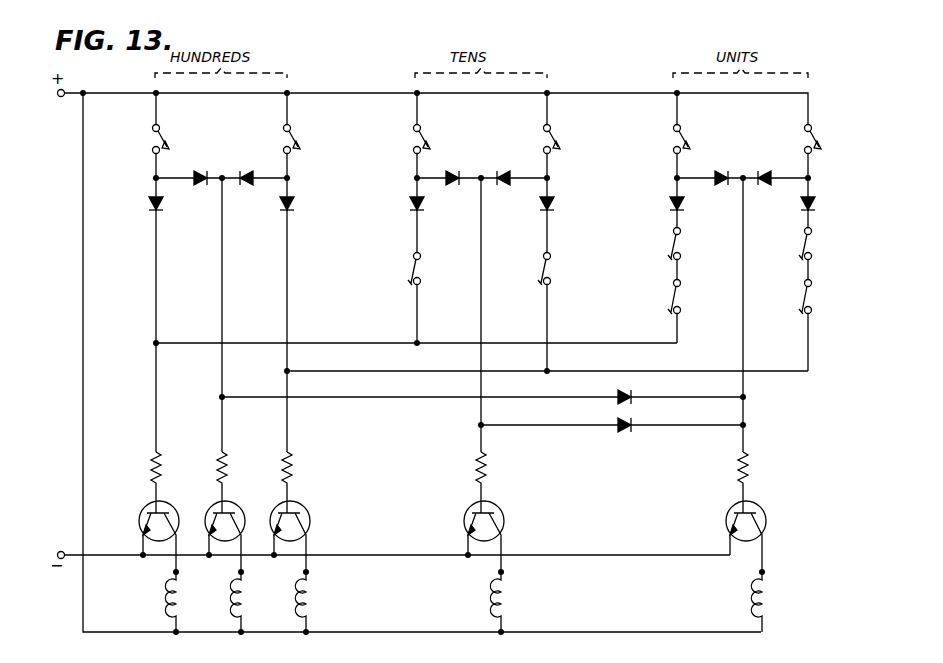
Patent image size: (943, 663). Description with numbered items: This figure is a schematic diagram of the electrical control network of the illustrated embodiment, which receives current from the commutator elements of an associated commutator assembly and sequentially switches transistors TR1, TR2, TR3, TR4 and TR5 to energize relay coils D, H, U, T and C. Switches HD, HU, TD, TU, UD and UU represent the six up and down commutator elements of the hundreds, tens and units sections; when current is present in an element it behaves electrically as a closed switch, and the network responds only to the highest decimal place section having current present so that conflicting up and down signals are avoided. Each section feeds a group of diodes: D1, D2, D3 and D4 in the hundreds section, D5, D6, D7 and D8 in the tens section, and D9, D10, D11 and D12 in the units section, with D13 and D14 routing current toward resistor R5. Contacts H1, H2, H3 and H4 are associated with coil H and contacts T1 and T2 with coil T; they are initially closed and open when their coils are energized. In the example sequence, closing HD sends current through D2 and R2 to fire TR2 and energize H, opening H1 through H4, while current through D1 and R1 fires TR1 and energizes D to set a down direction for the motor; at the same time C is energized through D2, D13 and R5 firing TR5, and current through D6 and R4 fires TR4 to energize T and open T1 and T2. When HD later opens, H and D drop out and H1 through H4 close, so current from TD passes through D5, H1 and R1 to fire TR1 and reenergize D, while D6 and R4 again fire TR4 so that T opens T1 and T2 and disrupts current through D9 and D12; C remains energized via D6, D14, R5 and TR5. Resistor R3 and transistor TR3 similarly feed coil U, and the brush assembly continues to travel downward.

The hundreds down switch HD is at (148, 135).
The hundreds up switch HU is at (276, 135).
The tens down switch TD is at (408, 135).
The tens up switch TU is at (538, 135).
The units down switch UD is at (670, 135).
The units up switch UU is at (801, 152).
The diode D1 is at (145, 212).
The diode D2 is at (200, 189).
The diode D3 is at (246, 189).
The diode D4 is at (298, 202).
The diode D5 is at (404, 210).
The diode D6 is at (450, 189).
The diode D7 is at (504, 189).
The diode D8 is at (561, 207).
The diode D9 is at (665, 207).
The diode D10 is at (712, 190).
The diode D11 is at (768, 190).
The diode D12 is at (824, 208).
The diode D13 is at (641, 392).
The diode D14 is at (644, 421).
The contact H1 is at (428, 269).
The contact H2 is at (559, 269).
The contact H3 is at (686, 244).
The contact H4 is at (818, 244).
The contact T1 is at (687, 297).
The contact T2 is at (817, 297).
The resistor R1 is at (171, 468).
The resistor R2 is at (236, 468).
The resistor R3 is at (301, 468).
The resistor R4 is at (497, 468).
The resistor R5 is at (758, 468).
The transistor TR1 is at (169, 528).
The transistor TR2 is at (234, 528).
The transistor TR3 is at (305, 528).
The transistor TR4 is at (501, 528).
The transistor TR5 is at (761, 528).
The relay coil D is at (163, 602).
The relay coil H is at (228, 602).
The relay coil U is at (294, 602).
The relay coil T is at (489, 602).
The relay coil C is at (748, 602).